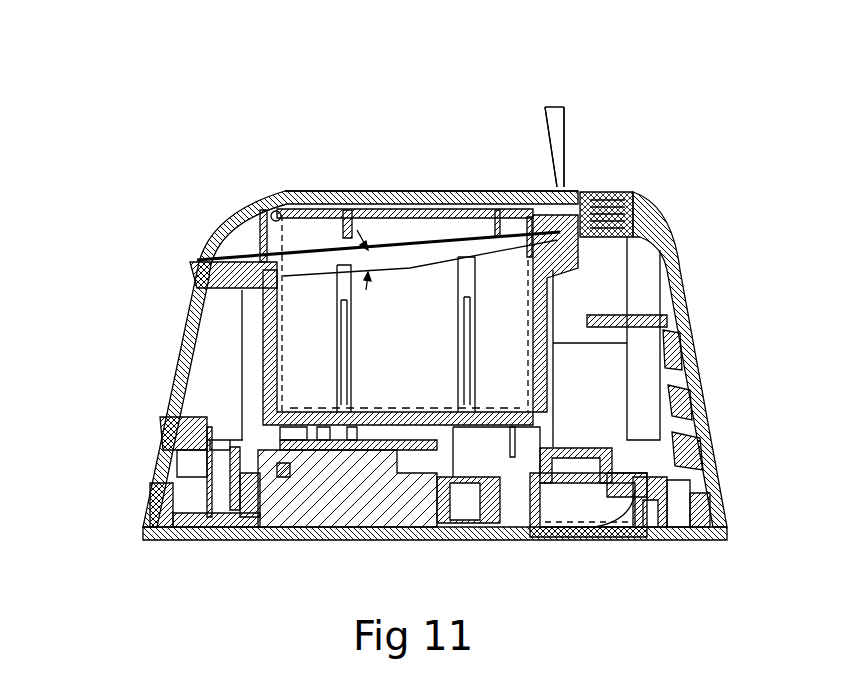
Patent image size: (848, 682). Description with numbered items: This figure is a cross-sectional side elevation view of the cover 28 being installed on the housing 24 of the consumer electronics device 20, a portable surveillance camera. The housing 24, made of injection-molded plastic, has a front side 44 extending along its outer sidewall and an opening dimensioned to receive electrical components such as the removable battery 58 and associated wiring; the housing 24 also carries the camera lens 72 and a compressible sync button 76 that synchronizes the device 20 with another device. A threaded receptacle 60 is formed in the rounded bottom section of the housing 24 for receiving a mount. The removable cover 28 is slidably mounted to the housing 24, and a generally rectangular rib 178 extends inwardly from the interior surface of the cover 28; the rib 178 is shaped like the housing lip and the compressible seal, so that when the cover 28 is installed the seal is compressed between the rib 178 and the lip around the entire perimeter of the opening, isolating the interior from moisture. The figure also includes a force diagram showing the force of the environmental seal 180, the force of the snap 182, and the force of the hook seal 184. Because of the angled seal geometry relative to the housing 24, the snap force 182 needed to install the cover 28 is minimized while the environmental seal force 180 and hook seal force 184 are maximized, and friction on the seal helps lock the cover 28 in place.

The consumer electronics device 20 is at (373, 168).
The housing 24 is at (680, 261).
The removable cover 28 is at (236, 186).
The front side 44 is at (470, 537).
The battery 58 is at (283, 318).
The threaded receptacle 60 is at (607, 193).
The lens 72 is at (612, 540).
The sync button 76 is at (160, 425).
The rib 178 is at (260, 243).
The force of the environmental seal 180 is at (548, 140).
The force of the snap 182 is at (553, 110).
The force of the hook seal 184 is at (565, 140).